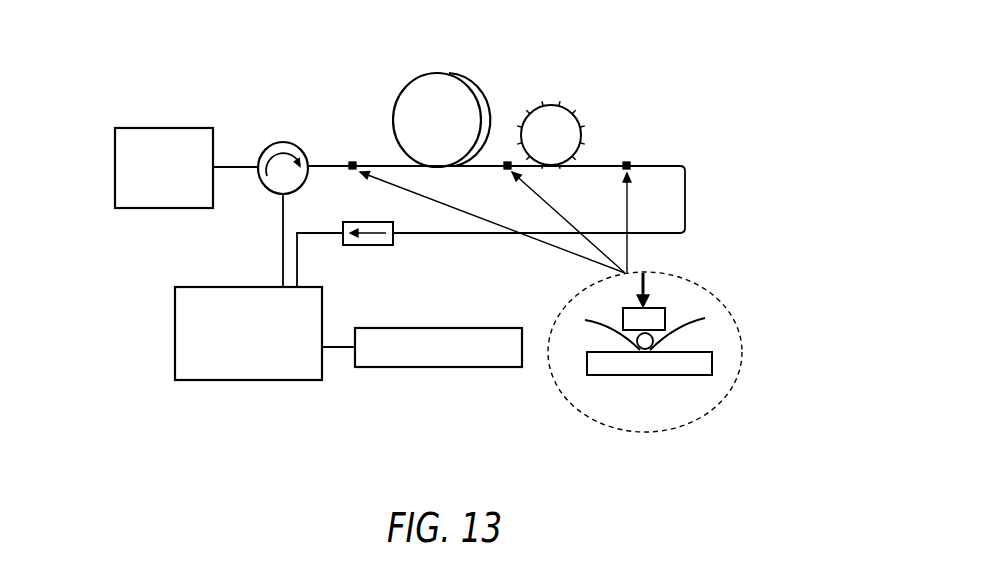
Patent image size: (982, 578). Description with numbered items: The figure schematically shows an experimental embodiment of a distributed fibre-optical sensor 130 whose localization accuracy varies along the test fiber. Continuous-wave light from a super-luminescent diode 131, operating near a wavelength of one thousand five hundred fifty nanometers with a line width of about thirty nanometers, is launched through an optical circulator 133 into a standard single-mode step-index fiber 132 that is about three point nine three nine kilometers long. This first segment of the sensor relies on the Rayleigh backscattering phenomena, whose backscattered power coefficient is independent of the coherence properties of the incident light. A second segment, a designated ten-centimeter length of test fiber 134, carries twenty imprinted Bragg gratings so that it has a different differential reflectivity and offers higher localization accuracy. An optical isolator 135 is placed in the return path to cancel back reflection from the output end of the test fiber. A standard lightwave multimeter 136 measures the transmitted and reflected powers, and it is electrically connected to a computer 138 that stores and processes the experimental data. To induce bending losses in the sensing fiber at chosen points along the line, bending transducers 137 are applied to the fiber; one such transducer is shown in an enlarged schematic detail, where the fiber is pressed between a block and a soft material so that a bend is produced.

The distributed fibre-optical sensor 130 is at (170, 73).
The super-luminescent diode 131 is at (130, 166).
The standard single-mode step-index fiber 132 is at (397, 97).
The optical circulator 133 is at (280, 173).
The designated 10-cm length of test fiber 134 is at (580, 128).
The optical isolator 135 is at (363, 238).
The lightwave multimeter 136 is at (193, 335).
The bending transducers 137 is at (587, 297).
The computer 138 is at (492, 352).